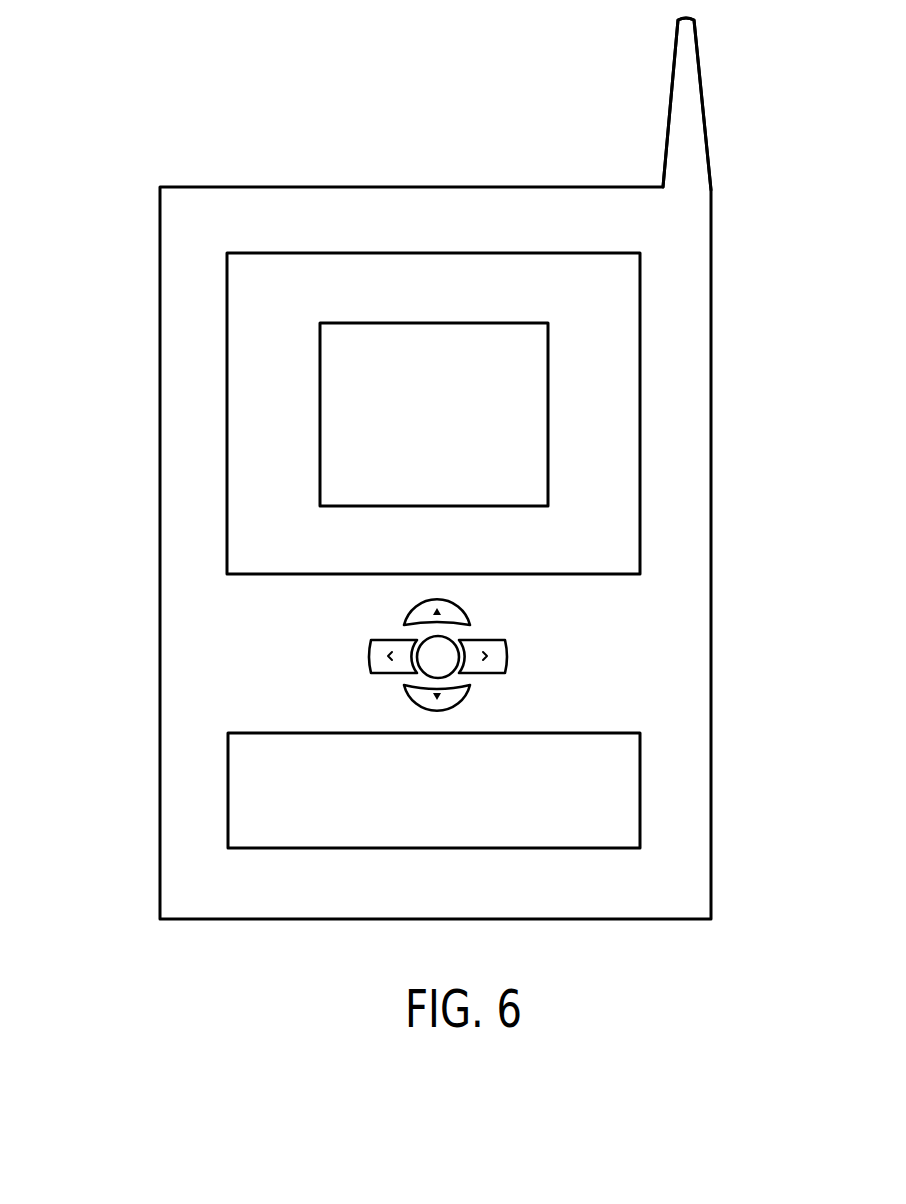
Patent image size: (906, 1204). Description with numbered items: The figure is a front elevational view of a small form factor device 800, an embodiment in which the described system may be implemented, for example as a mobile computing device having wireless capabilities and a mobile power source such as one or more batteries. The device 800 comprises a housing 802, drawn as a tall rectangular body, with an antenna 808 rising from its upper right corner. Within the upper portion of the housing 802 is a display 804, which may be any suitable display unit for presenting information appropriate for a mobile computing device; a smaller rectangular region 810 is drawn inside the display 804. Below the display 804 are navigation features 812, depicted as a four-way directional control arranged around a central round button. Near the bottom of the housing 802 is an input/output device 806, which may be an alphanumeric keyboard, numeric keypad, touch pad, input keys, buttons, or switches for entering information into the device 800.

The small form factor device 800 is at (162, 125).
The housing 802 is at (160, 645).
The display 804 is at (640, 311).
The input/output (I/O) device 806 is at (640, 790).
The antenna 808 is at (671, 103).
The display window 810 is at (434, 322).
The navigation features 812 is at (539, 656).